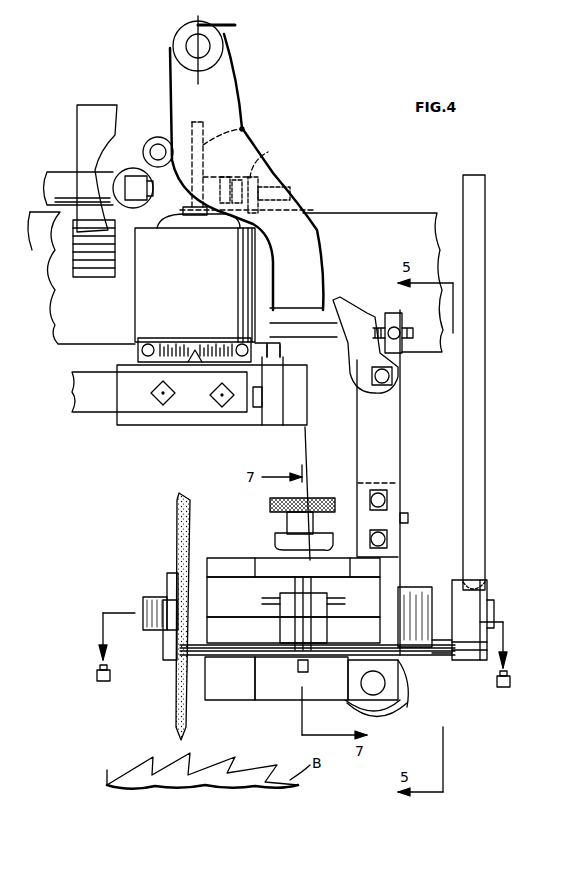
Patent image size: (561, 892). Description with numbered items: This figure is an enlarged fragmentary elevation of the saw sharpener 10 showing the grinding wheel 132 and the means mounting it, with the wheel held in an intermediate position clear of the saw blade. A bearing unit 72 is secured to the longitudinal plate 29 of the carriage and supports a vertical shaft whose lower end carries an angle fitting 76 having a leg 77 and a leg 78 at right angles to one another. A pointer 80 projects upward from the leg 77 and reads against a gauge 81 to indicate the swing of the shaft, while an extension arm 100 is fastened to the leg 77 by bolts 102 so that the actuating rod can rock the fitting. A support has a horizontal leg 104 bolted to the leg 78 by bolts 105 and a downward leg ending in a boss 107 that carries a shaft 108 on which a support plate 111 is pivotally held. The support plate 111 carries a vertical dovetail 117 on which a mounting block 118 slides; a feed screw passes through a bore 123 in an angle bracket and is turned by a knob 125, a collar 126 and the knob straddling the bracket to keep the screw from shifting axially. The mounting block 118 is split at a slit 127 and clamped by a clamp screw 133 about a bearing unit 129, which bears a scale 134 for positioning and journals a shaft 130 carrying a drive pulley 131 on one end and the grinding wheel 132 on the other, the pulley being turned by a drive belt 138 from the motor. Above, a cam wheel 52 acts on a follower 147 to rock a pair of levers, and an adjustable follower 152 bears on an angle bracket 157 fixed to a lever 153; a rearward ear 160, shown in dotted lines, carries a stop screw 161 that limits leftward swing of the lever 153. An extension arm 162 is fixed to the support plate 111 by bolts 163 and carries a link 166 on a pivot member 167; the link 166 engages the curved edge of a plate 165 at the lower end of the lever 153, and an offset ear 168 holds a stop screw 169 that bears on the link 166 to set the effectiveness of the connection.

The cutting machine 10 is at (235, 25).
The longitudinal plate 29 is at (345, 217).
The cam wheel 52 is at (85, 275).
The bearing unit 72 is at (135, 318).
The angle fitting 76 is at (150, 432).
The leg 77 is at (212, 428).
The leg 78 is at (272, 428).
The pointer 80 is at (195, 345).
The gauge 81 is at (160, 340).
The extension arm 100 is at (86, 412).
The bolts 102 is at (150, 393).
The horizontal leg 104 is at (290, 410).
The bolts 105 is at (264, 412).
The boss 107 is at (410, 695).
The shaft 108 is at (375, 693).
The support plate 111 is at (222, 570).
The dovetail 117 is at (275, 700).
The mounting block 118 is at (235, 656).
The bore 123 is at (285, 527).
The knob 125 is at (268, 503).
The collar 126 is at (280, 548).
The slit 127 is at (240, 617).
The bearing unit 129 is at (415, 655).
The shaft 130 is at (488, 605).
The drive pulley 131 is at (490, 580).
The grinding wheel 132 is at (185, 722).
The clamp screw 133 is at (280, 585).
The scale 134 is at (410, 590).
The drive belt 138 is at (490, 400).
The follower 147 is at (130, 165).
The follower 152 is at (160, 133).
The lever 153 is at (238, 108).
The angle bracket 157 is at (248, 130).
The ear 160 is at (270, 150).
The stop screw 161 is at (300, 185).
The extension arm 162 is at (385, 455).
The bolts 163 is at (390, 495).
The plate 165 is at (322, 340).
The link 166 is at (348, 305).
The pivot member 167 is at (395, 385).
The offset ear 168 is at (404, 320).
The stop screw 169 is at (413, 331).